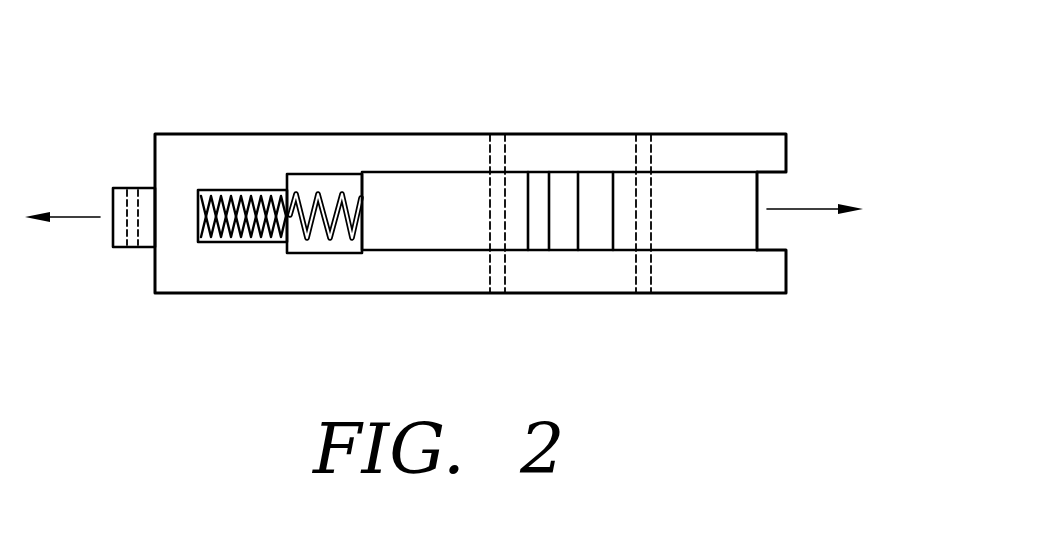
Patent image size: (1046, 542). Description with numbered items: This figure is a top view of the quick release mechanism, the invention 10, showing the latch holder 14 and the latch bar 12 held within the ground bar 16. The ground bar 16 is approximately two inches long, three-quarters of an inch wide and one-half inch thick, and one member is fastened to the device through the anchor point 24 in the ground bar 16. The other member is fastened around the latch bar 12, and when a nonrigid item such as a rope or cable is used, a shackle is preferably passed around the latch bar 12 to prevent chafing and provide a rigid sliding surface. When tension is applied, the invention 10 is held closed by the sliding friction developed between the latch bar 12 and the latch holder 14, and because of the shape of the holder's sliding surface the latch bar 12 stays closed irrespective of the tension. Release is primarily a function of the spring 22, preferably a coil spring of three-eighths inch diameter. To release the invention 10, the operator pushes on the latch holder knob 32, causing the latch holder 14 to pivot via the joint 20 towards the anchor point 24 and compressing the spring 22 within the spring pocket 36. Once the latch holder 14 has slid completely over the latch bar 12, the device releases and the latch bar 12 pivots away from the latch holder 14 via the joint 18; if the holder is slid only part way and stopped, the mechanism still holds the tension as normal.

The invention 10 is at (313, 34).
The latch bar 12 is at (740, 235).
The latch holder 14 is at (395, 182).
The ground bar 16 is at (445, 293).
The joint 18 is at (647, 134).
The joint 20 is at (500, 134).
The spring 22 is at (338, 232).
The anchor point 24 is at (133, 188).
The latch holder knob 32 is at (570, 238).
The spring pocket 36 is at (251, 190).